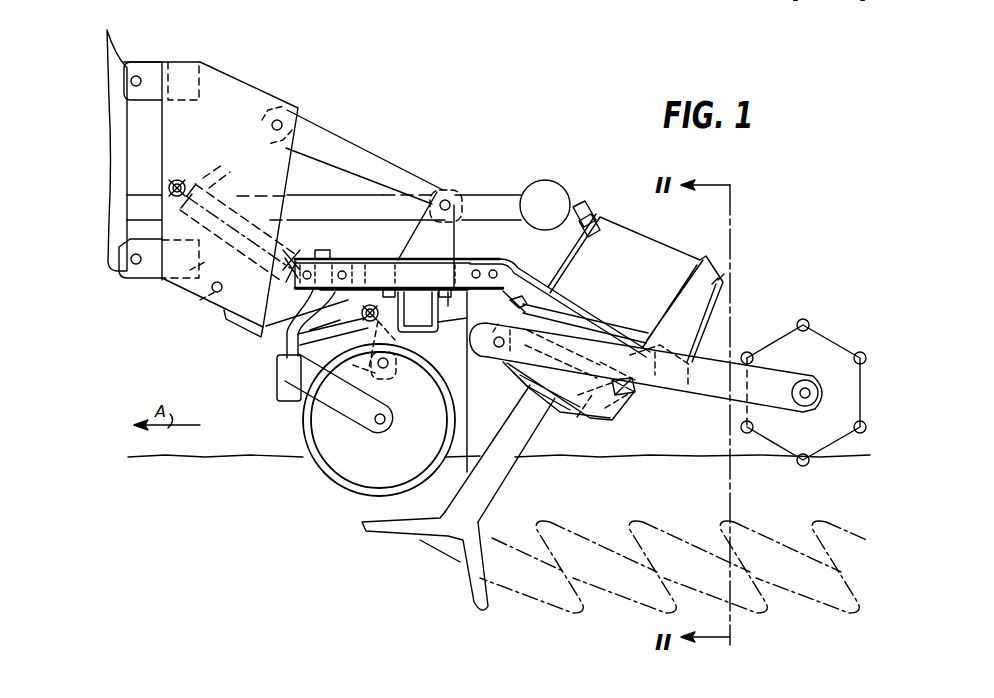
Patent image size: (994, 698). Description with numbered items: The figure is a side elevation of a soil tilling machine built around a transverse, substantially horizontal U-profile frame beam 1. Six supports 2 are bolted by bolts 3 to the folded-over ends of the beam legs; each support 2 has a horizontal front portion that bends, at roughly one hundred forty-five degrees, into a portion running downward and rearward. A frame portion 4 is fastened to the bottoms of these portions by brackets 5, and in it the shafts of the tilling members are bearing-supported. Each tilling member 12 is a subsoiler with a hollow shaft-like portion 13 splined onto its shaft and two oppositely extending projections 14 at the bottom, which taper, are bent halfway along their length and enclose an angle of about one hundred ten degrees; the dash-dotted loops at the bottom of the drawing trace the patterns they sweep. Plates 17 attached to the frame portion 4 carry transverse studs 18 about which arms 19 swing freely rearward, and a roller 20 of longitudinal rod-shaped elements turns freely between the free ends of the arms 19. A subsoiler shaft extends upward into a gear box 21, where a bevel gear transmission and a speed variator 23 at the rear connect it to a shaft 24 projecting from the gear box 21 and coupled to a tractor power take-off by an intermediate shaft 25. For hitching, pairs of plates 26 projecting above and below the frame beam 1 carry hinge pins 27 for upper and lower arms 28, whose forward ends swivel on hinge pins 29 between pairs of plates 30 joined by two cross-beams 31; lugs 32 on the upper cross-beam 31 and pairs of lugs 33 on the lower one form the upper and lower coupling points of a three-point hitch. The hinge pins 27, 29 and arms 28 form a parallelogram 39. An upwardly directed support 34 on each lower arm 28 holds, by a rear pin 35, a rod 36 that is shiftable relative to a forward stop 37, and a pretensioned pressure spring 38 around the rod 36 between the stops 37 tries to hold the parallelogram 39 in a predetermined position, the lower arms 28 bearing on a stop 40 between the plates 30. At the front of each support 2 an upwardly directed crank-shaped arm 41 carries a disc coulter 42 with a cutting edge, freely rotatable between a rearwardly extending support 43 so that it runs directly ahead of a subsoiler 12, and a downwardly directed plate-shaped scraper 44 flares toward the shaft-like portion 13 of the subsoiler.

The frame beam 1 is at (462, 326).
The support 2 is at (528, 268).
The bolt 3 is at (446, 282).
The frame portion 4 is at (578, 407).
The bracket 5 is at (530, 310).
The tilling member 12 is at (491, 493).
The hollow shaft-like portion 13 is at (520, 433).
The projection 14 is at (393, 533).
The plate 17 is at (612, 418).
The stud 18 is at (499, 356).
The arm 19 is at (712, 388).
The roller 20 is at (838, 336).
The gear box 21 is at (642, 252).
The speed variator 23 is at (720, 285).
The shaft 24 is at (580, 214).
The intermediate shaft 25 is at (492, 200).
The pair of plates 26 is at (443, 243).
The hinge pin 27 is at (445, 199).
The arm 28 is at (355, 158).
The hinge pin 29 is at (272, 125).
The pair of plates 30 is at (235, 92).
The cross-beam 31 is at (190, 61).
The lug 32 is at (143, 62).
The lug 33 is at (148, 270).
The support 34 is at (352, 332).
The pin 35 is at (178, 182).
The rod 36 is at (235, 210).
The stop 37 is at (193, 186).
The pressure spring 38 is at (297, 243).
The parallelogram 39 is at (365, 243).
The stop 40 is at (240, 320).
The arm 41 is at (280, 342).
The disc coulter 42 is at (320, 427).
The support 43 is at (346, 410).
The scraper 44 is at (466, 417).